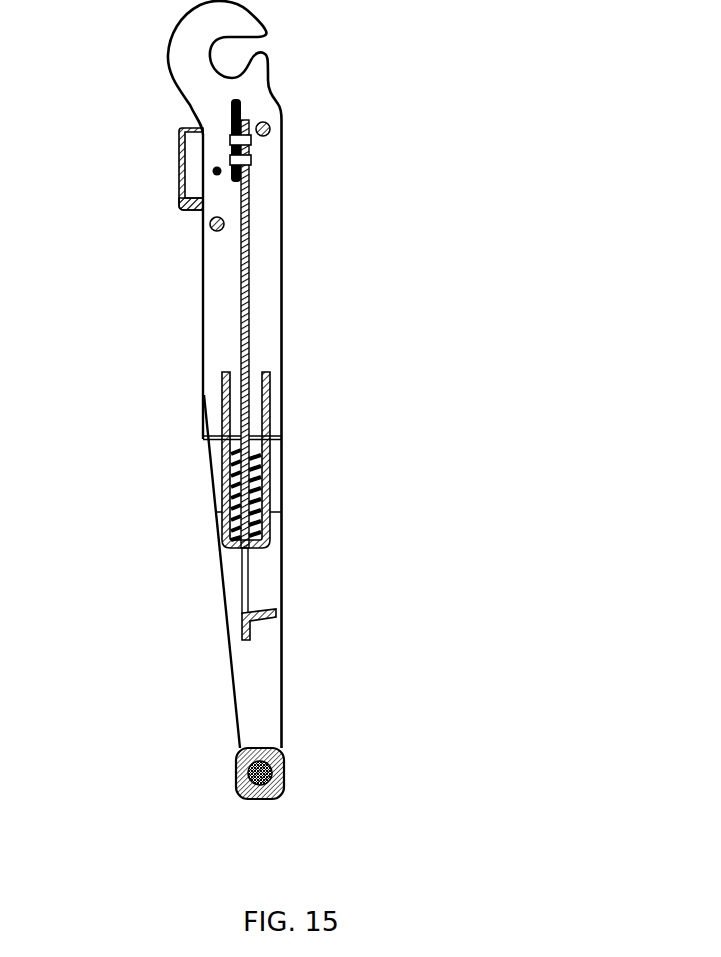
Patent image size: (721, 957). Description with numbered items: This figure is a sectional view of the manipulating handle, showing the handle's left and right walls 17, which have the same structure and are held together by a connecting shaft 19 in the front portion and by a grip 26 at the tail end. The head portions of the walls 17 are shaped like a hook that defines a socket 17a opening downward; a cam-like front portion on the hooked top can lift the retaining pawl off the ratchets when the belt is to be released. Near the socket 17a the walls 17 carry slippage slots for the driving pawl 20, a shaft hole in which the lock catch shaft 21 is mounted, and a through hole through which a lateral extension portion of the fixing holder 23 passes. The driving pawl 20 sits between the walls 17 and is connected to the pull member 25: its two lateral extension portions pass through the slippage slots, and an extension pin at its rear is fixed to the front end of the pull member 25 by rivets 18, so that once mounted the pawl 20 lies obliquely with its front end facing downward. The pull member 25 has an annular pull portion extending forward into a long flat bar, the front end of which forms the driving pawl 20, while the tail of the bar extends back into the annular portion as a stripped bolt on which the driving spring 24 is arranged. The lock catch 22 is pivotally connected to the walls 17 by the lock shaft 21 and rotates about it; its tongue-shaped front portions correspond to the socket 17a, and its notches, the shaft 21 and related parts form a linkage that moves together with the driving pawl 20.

The left wall and right wall 17 is at (273, 288).
The socket 17a is at (276, 44).
The rivets 18 is at (252, 163).
The connecting shaft 19 is at (270, 129).
The driving pawl 20 is at (242, 108).
The lock catch shaft 21 is at (214, 171).
The lock catch 22 is at (185, 207).
The fixing holder 23 is at (222, 403).
The driving spring 24 is at (232, 483).
The pull member 25 is at (250, 632).
The grip 26 is at (282, 792).